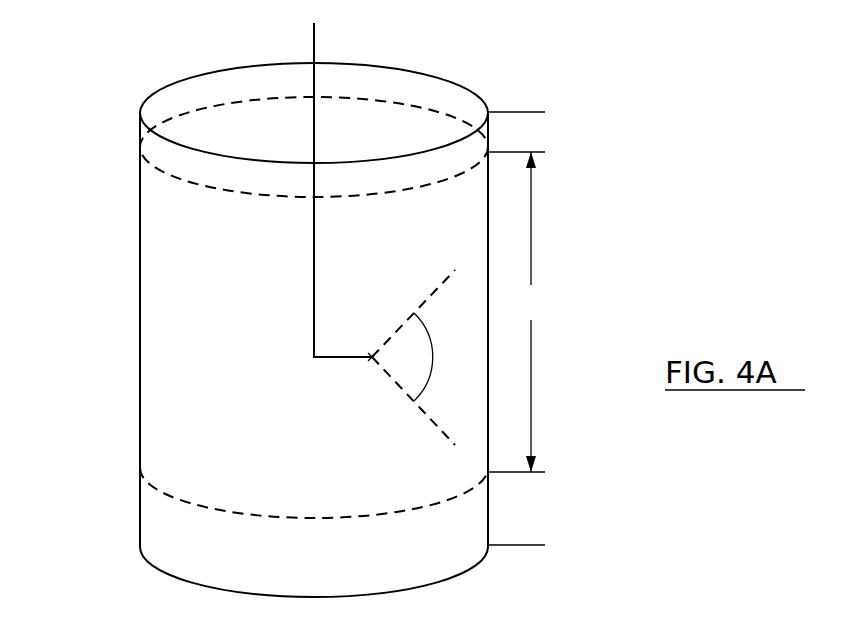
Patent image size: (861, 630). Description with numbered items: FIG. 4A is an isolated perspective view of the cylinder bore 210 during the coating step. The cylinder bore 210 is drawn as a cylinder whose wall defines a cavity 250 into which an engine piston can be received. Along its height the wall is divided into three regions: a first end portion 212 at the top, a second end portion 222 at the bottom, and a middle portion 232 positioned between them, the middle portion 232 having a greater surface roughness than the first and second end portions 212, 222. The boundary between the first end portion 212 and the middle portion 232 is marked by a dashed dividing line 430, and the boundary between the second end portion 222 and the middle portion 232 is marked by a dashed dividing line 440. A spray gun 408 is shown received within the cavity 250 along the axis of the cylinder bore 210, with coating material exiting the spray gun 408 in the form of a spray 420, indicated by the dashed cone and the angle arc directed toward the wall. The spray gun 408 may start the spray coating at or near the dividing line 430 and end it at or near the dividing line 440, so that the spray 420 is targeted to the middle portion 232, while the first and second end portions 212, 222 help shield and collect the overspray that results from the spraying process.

The cylinder bore 210 is at (102, 70).
The first end portion 212 is at (516, 132).
The second end portion 222 is at (516, 508).
The middle portion 232 is at (535, 312).
The cavity 250 is at (224, 342).
The spray gun 408 is at (332, 205).
The spray 420 is at (428, 357).
The dividing line 430 is at (189, 187).
The dividing line 440 is at (186, 506).